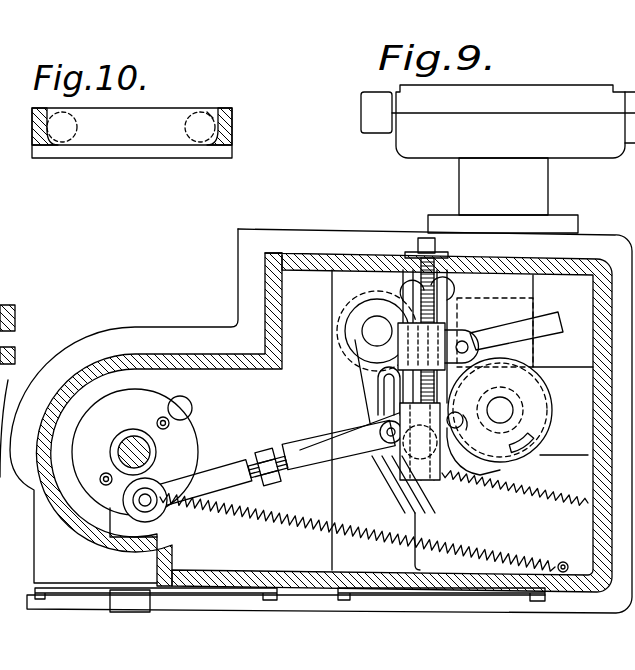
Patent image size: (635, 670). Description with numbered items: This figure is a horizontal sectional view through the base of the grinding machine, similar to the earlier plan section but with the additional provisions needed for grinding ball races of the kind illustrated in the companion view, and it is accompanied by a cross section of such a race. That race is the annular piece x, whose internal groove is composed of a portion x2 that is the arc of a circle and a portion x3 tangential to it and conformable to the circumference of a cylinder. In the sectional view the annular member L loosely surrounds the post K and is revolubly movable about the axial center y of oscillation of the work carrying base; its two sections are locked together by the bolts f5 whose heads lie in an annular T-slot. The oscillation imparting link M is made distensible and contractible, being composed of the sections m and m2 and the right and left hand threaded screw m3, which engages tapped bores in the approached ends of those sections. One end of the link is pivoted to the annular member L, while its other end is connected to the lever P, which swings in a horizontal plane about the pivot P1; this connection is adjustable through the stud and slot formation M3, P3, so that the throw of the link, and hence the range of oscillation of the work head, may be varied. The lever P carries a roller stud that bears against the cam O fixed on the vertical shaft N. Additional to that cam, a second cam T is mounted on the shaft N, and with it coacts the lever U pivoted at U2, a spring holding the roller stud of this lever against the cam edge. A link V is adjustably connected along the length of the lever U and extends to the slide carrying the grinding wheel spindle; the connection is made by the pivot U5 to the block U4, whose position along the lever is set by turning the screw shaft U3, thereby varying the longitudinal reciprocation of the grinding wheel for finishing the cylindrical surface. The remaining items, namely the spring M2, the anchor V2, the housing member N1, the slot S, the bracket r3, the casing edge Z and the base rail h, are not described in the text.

In FIG. 10, the annular piece x is at (233, 137).
In FIG. 10, the arcuate groove portion x2 is at (213, 140).
In FIG. 10, the cylindrical groove portion x3 is at (207, 112).
In FIG. 9, the bracket r3 is at (22, 296).
In FIG. 9, the casing edge Z is at (4, 433).
In FIG. 9, the base rail h is at (298, 584).
In FIG. 9, the annular member L is at (158, 401).
In FIG. 9, the post K is at (154, 450).
In FIG. 9, the axial center of oscillation y is at (122, 443).
In FIG. 9, the bolts f5 is at (157, 419).
In FIG. 9, the link section m is at (187, 491).
In FIG. 9, the oscillation imparting link M is at (236, 460).
In FIG. 9, the right and left hand threaded screw m3 is at (278, 452).
In FIG. 9, the link section m2 is at (342, 444).
In FIG. 9, the stud and slot connection M3 is at (336, 462).
In FIG. 9, the spring M2 is at (312, 532).
In FIG. 9, the spring anchor V2 is at (586, 500).
In FIG. 9, the lever pivot P1 is at (362, 333).
In FIG. 9, the lever P is at (373, 400).
In FIG. 9, the slot P3 is at (407, 360).
In FIG. 9, the block U4 is at (378, 383).
In FIG. 9, the lever U is at (446, 330).
In FIG. 9, the screw shaft U3 is at (445, 284).
In FIG. 9, the pivot U2 is at (440, 292).
In FIG. 9, the pivot U5 is at (465, 340).
In FIG. 9, the link V is at (522, 320).
In FIG. 9, the arm housing N1 is at (541, 371).
In FIG. 9, the vertical shaft N is at (513, 408).
In FIG. 9, the slot S is at (545, 430).
In FIG. 9, the cam T is at (494, 460).
In FIG. 9, the cam O is at (472, 472).